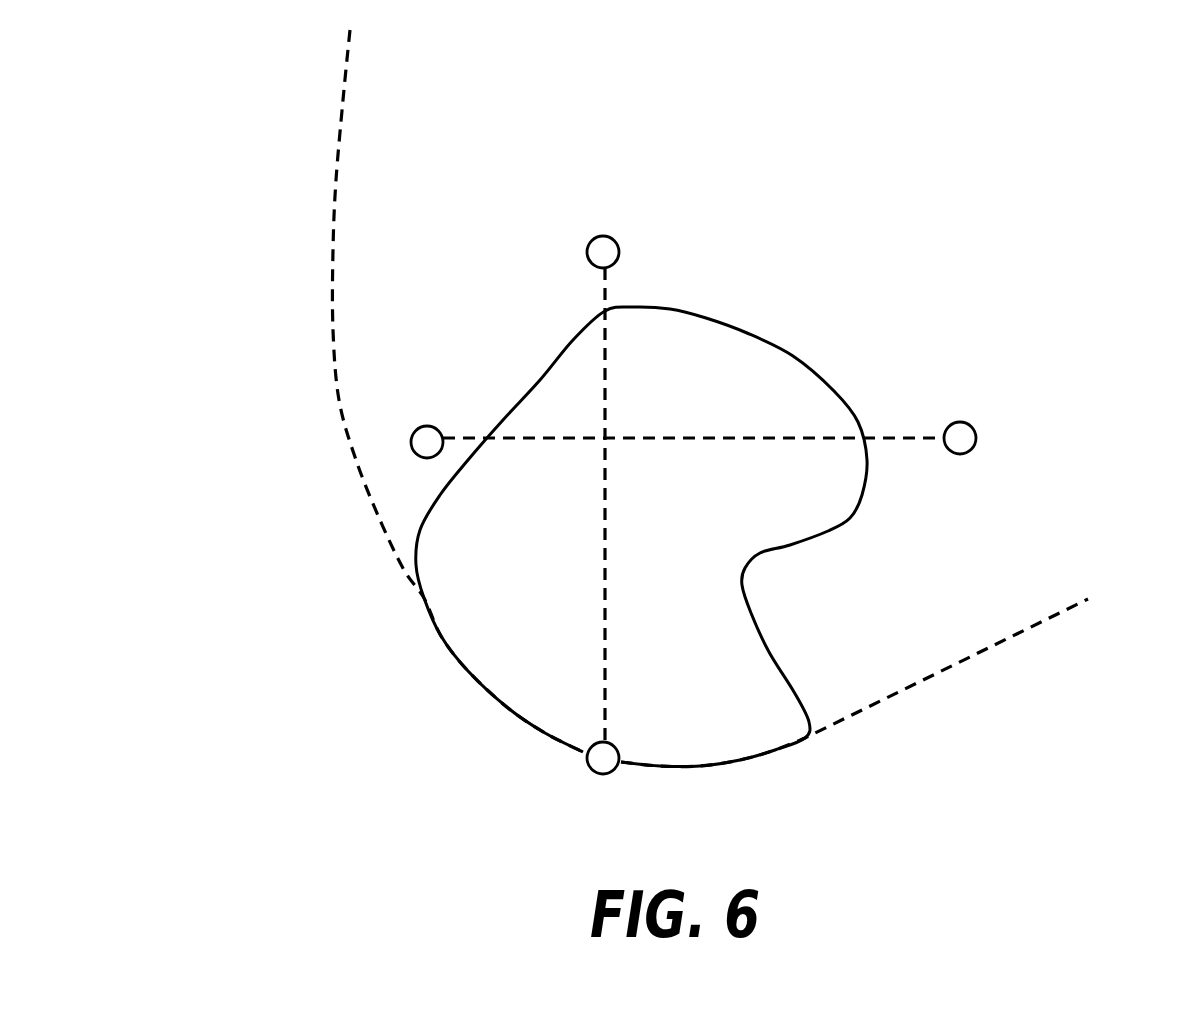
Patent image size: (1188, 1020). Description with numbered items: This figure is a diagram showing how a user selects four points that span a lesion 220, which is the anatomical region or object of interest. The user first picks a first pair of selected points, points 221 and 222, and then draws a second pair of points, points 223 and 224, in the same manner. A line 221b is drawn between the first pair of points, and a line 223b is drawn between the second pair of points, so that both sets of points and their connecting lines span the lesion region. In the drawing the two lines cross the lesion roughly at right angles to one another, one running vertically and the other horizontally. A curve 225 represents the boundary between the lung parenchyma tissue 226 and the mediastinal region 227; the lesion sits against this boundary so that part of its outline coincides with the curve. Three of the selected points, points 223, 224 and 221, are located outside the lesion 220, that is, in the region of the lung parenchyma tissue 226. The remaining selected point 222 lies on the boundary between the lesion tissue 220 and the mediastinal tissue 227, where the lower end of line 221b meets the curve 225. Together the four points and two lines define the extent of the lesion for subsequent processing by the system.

The lesion 220 is at (715, 324).
The point 221 is at (608, 236).
The line 221b is at (603, 562).
The point 222 is at (610, 772).
The point 223 is at (431, 426).
The line 223b is at (724, 436).
The point 224 is at (977, 432).
The curve 225 is at (920, 685).
The lung parenchyma tissue 226 is at (1155, 243).
The mediastinal region 227 is at (245, 603).